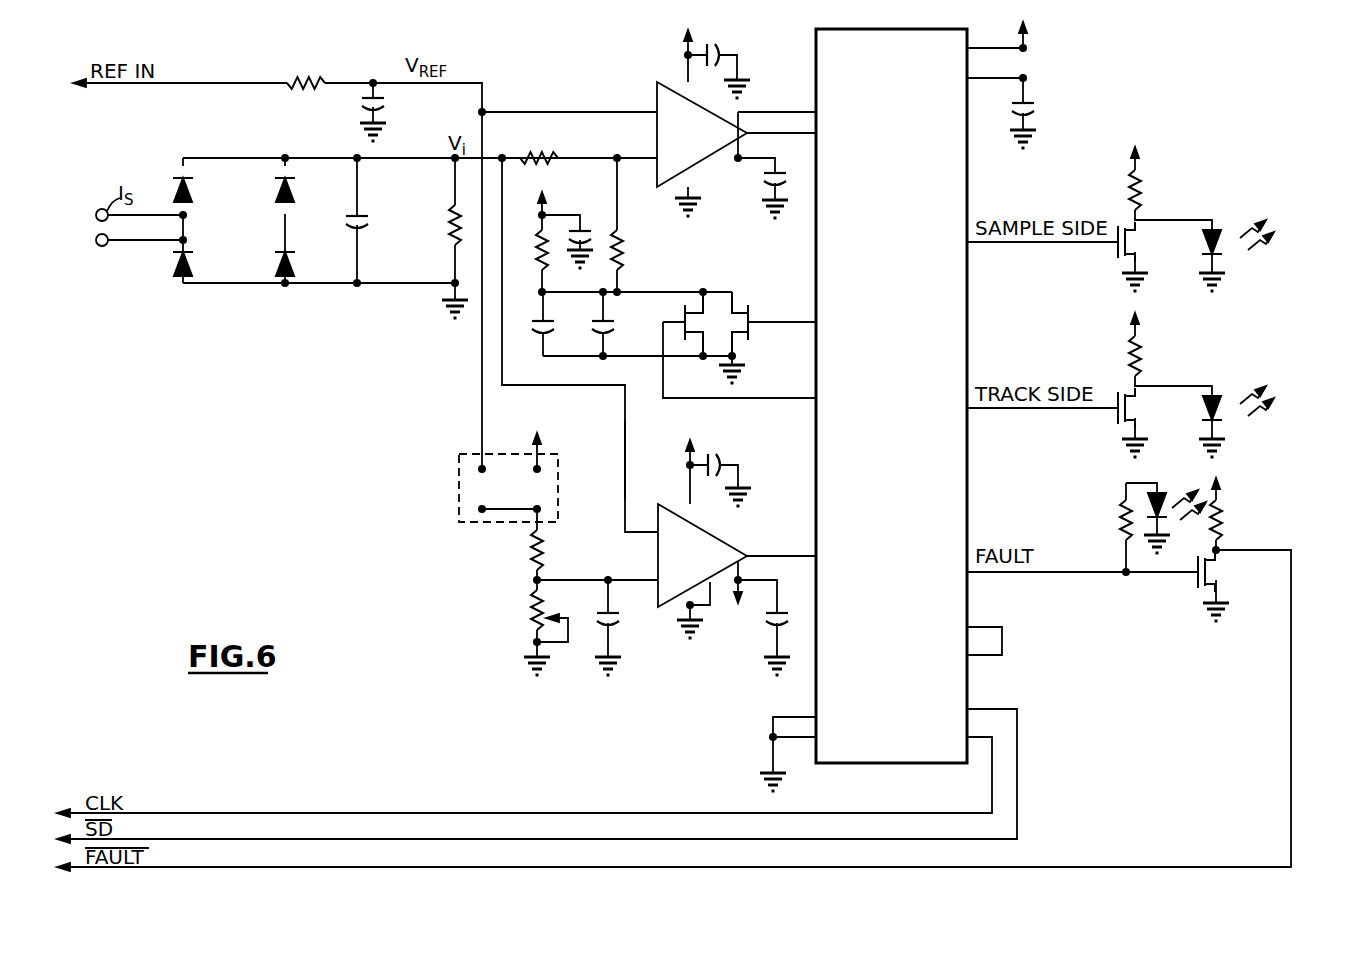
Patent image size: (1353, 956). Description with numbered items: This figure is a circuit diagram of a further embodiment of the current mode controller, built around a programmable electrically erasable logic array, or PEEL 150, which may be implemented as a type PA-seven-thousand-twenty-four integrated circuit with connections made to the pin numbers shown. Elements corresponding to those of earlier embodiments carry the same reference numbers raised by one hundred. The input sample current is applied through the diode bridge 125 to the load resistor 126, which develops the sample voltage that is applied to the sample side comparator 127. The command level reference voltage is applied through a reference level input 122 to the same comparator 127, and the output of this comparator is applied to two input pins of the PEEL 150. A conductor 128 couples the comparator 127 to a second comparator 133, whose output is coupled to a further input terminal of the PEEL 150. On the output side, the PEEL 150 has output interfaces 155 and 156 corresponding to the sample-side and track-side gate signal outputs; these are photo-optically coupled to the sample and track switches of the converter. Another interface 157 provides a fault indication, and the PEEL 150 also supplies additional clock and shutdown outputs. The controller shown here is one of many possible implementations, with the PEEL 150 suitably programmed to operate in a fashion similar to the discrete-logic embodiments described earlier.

The reference level input 122 is at (205, 83).
The diode bridge 125 is at (272, 192).
The load resistor 126 is at (446, 230).
The sample side comparator 127 is at (657, 100).
The conductor 128 is at (625, 425).
The second comparator 133 is at (718, 545).
The PEEL 150 is at (816, 278).
The output interface 155 is at (1170, 220).
The output interface 156 is at (1150, 385).
The fault indication interface 157 is at (1250, 550).